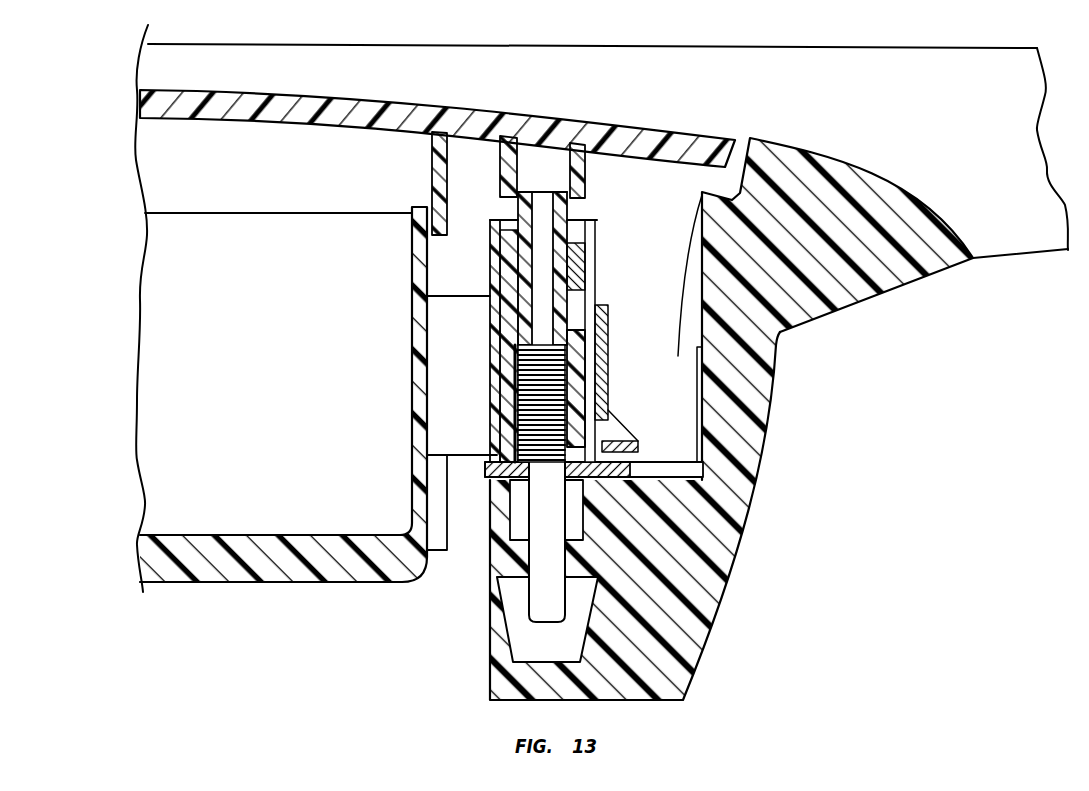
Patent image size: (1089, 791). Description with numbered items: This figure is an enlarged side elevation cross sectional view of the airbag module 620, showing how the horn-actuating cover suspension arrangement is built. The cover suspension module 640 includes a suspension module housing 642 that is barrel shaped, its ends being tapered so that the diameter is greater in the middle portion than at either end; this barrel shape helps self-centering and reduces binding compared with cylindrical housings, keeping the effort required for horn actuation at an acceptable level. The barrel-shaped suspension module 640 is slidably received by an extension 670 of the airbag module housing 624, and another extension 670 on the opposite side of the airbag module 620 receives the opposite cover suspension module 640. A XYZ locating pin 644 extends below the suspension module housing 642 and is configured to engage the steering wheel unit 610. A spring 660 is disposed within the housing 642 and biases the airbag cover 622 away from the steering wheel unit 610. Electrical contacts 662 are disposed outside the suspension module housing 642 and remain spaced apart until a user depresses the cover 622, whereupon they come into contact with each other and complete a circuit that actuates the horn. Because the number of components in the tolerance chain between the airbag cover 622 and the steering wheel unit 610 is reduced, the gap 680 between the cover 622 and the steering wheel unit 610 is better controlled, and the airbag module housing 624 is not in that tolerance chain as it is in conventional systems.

The steering wheel unit 610 is at (615, 648).
The airbag module 620 is at (438, 592).
The airbag cover 622 is at (642, 135).
The airbag module housing 624 is at (173, 575).
The cover suspension module 640 is at (593, 361).
The suspension module housing 642 is at (582, 390).
The XYZ locating pin 644 is at (553, 574).
The spring 660 is at (522, 428).
The electrical contacts 662 is at (640, 453).
The extension 670 is at (492, 337).
The gap 680 is at (737, 148).